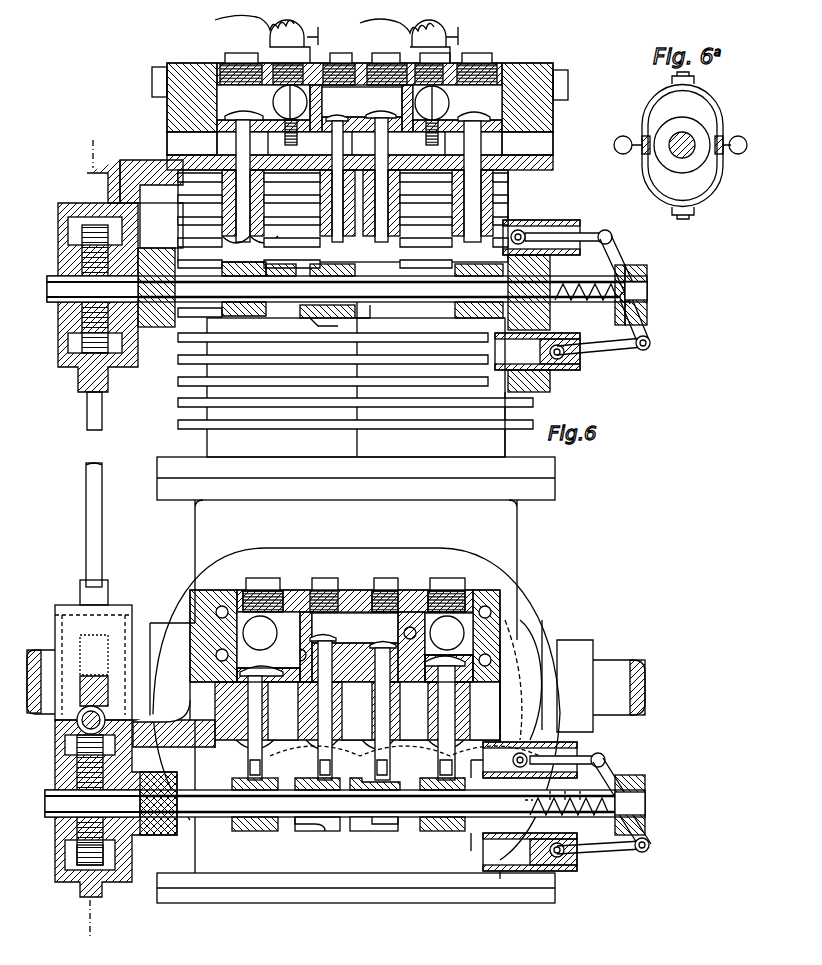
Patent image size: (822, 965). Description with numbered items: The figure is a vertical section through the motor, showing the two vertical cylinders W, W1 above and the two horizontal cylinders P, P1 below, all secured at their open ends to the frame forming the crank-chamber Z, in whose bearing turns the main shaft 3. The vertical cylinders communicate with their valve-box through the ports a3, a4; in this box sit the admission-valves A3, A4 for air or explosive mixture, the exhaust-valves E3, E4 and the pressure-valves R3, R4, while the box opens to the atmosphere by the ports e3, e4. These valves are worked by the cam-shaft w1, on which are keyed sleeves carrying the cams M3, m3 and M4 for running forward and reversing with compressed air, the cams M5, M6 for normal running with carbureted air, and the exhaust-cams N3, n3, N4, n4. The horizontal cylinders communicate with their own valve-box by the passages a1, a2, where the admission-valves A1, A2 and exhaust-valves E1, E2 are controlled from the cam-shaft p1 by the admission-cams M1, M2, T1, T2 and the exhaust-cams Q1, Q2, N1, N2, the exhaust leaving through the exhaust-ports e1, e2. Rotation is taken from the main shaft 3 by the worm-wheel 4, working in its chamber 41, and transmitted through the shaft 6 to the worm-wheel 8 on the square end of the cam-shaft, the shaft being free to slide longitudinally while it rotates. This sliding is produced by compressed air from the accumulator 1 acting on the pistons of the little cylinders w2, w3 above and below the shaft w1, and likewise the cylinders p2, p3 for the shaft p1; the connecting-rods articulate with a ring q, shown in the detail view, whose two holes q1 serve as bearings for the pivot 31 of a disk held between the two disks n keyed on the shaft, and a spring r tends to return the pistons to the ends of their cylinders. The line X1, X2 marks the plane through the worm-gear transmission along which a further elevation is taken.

In FIG. 6, the port a3 is at (276, 98).
In FIG. 6, the port a4 is at (445, 103).
In FIG. 6, the pressure-valve R3 is at (299, 135).
In FIG. 6, the pressure-valve R4 is at (432, 135).
In FIG. 6, the exhaust-valve E3 is at (250, 177).
In FIG. 6, the exhaust-valve E4 is at (472, 177).
In FIG. 6, the admission-valve A3 is at (337, 178).
In FIG. 6, the admission-valve A4 is at (381, 176).
In FIG. 6, the port e3 is at (169, 142).
In FIG. 6, the port e4 is at (545, 146).
In FIG. 6, the vertical cylinder W is at (535, 58).
In FIG. 6, the vertical cylinder W1 is at (347, 352).
In FIG. 6, the exhaust-cam N3 is at (258, 262).
In FIG. 6, the admission-cam m3 is at (289, 251).
In FIG. 6, the exhaust-cam n3 is at (230, 316).
In FIG. 6, the admission-cam M6 is at (392, 262).
In FIG. 6, the exhaust-cam n4 is at (458, 262).
In FIG. 6, the admission-cam M4 is at (345, 300).
In FIG. 6, the admission-cam M5 is at (324, 327).
In FIG. 6, the admission-cam M3 is at (360, 320).
In FIG. 6, the exhaust-cam N4 is at (472, 318).
In FIG. 6, the little cylinder w2 is at (560, 221).
In FIG. 6, the little cylinder w3 is at (538, 359).
In FIG. 6, the ring q is at (614, 240).
In FIG. 6a, the ring q is at (712, 116).
In FIG. 6, the main shaft 3 is at (632, 260).
In FIG. 6, the hole q1 is at (649, 335).
In FIG. 6a, the hole q1 is at (644, 134).
In FIG. 6, the disk n is at (628, 272).
In FIG. 6a, the disk n is at (682, 144).
In FIG. 6, the shaft end block 31 is at (646, 298).
In FIG. 6, the spring r is at (586, 304).
In FIG. 6a, the spring r is at (680, 152).
In FIG. 6, the section line X1 is at (91, 144).
In FIG. 6, the section line X2 is at (89, 927).
In FIG. 6, the crank-chamber Z is at (333, 686).
In FIG. 6, the passage a1 is at (260, 633).
In FIG. 6, the passage a2 is at (447, 633).
In FIG. 6, the exhaust-valve E1 is at (261, 723).
In FIG. 6, the exhaust-valve E2 is at (445, 718).
In FIG. 6, the admission-valve A1 is at (323, 708).
In FIG. 6, the admission-valve A2 is at (383, 711).
In FIG. 6, the exhaust-port e1 is at (268, 681).
In FIG. 6, the exhaust-port e2 is at (449, 676).
In FIG. 6, the horizontal cylinder P1 is at (268, 585).
In FIG. 6, the horizontal cylinder P is at (487, 588).
In FIG. 6, the cam-shaft p1 is at (345, 803).
In FIG. 6, the exhaust-cam N1 is at (240, 778).
In FIG. 6, the exhaust-cam Q1 is at (258, 822).
In FIG. 6, the admission-cam M1 is at (308, 778).
In FIG. 6, the admission-cam T2 is at (358, 777).
In FIG. 6, the exhaust-cam Q2 is at (438, 778).
In FIG. 6, the admission-cam T1 is at (308, 820).
In FIG. 6, the admission-cam M2 is at (386, 824).
In FIG. 6, the exhaust-cam N2 is at (436, 826).
In FIG. 6, the little cylinder p2 is at (576, 754).
In FIG. 6, the little cylinder p3 is at (530, 859).
In FIG. 6, the accumulator 1 is at (587, 805).
In FIG. 6, the chamber 41 is at (122, 608).
In FIG. 6, the worm-wheel 4 is at (80, 652).
In FIG. 6, the shaft 6 is at (74, 732).
In FIG. 6, the worm-wheel 8 is at (90, 854).
In FIG. 6a, the cam-shaft w1 is at (690, 145).